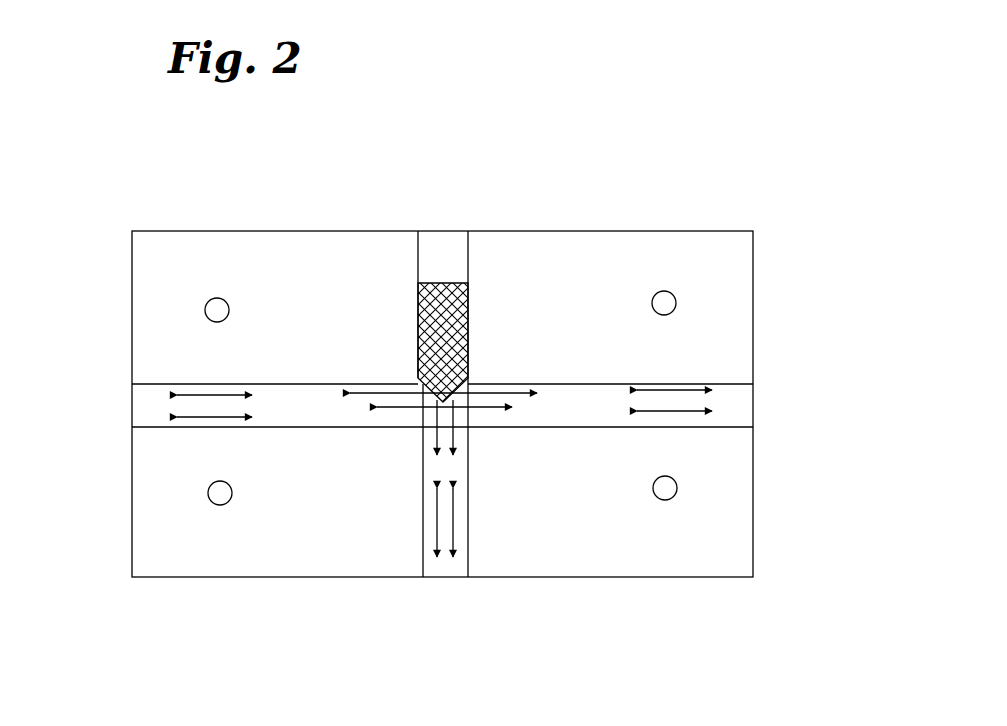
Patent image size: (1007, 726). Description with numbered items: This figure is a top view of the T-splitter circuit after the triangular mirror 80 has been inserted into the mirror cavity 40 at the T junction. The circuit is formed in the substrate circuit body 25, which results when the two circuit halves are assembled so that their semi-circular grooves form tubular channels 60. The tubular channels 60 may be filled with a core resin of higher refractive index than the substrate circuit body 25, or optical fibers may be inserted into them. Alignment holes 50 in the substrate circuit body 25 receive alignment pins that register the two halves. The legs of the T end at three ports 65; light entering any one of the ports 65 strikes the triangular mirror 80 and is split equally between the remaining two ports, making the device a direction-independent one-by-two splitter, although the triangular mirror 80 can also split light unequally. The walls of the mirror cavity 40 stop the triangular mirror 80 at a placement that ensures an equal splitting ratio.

The substrate circuit body 25 is at (570, 530).
The mirror cavity 40 is at (450, 250).
The alignment holes 50 is at (217, 495).
The tubular channels 60 is at (722, 397).
The ports 65 is at (132, 408).
The triangular mirror 80 is at (418, 287).